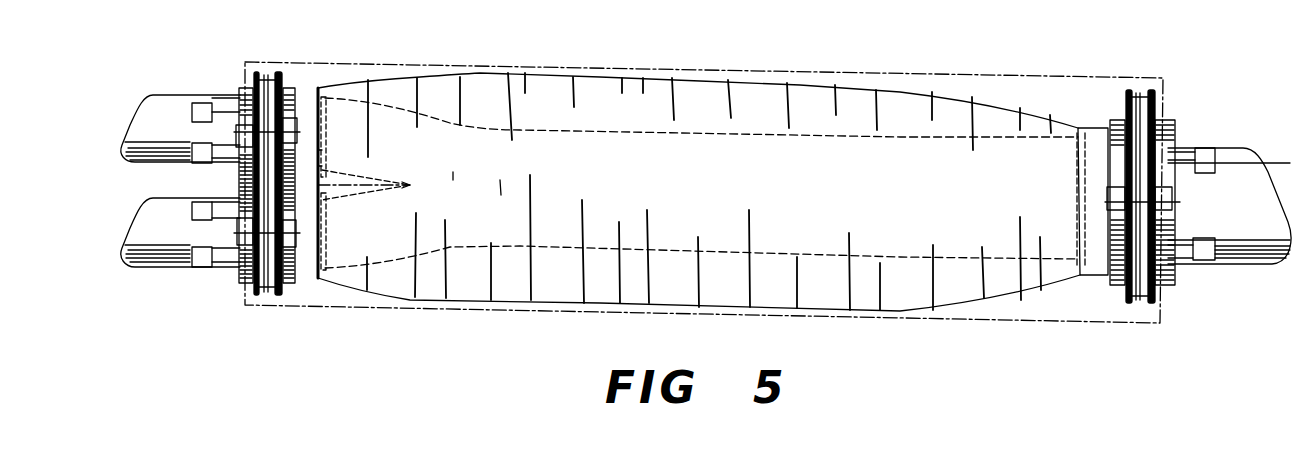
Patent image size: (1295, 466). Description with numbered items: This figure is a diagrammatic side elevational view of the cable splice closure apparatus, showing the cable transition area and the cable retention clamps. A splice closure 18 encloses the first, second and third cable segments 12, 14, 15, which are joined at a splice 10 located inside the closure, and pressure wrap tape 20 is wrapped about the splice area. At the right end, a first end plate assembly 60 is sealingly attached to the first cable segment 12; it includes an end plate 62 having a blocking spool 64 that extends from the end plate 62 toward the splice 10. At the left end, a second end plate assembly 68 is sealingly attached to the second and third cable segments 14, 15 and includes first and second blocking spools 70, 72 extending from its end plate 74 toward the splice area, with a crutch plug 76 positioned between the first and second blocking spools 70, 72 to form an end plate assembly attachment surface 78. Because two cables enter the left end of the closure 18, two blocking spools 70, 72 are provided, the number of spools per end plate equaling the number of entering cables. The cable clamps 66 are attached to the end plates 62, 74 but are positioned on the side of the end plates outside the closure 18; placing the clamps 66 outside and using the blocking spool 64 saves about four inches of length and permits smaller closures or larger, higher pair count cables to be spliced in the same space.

The splice 10 is at (790, 46).
The first cable segment 12 is at (1222, 264).
The second cable segment 14 is at (176, 95).
The third cable segment 15 is at (157, 262).
The splice closure 18 is at (973, 75).
The pressure wrap tape 20 is at (520, 72).
The first end plate assembly 60 is at (1168, 118).
The end plate 62 is at (1143, 90).
The blocking spool 64 is at (1088, 180).
The cable clamps 66 is at (202, 204).
The second end plate assembly 68 is at (252, 284).
The first blocking spool 70 is at (322, 138).
The second blocking spool 72 is at (322, 240).
The end plate 74 is at (279, 72).
The crutch plug 76 is at (322, 190).
The attachment surface 78 is at (322, 160).